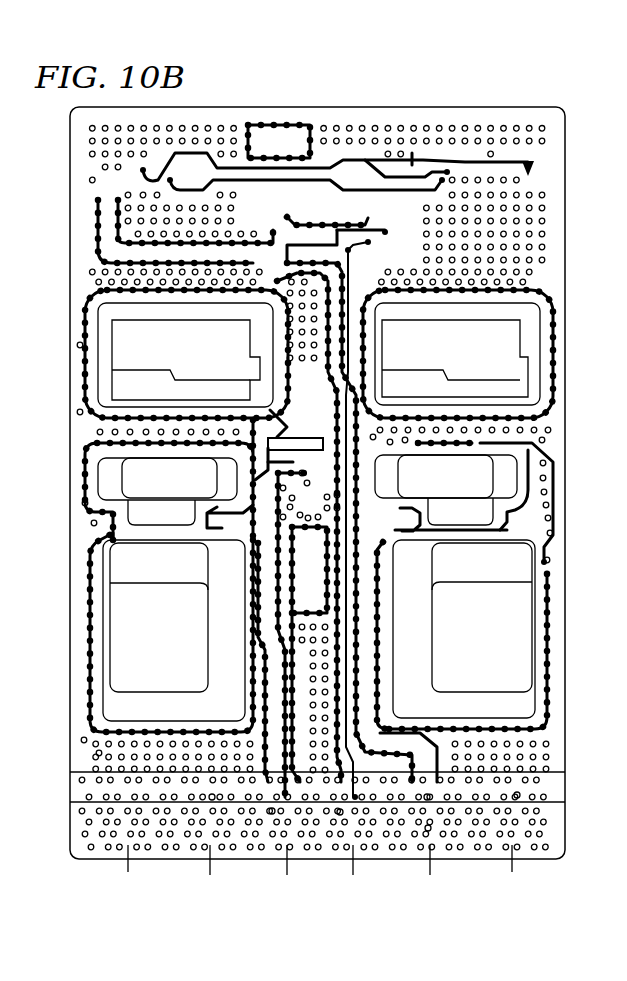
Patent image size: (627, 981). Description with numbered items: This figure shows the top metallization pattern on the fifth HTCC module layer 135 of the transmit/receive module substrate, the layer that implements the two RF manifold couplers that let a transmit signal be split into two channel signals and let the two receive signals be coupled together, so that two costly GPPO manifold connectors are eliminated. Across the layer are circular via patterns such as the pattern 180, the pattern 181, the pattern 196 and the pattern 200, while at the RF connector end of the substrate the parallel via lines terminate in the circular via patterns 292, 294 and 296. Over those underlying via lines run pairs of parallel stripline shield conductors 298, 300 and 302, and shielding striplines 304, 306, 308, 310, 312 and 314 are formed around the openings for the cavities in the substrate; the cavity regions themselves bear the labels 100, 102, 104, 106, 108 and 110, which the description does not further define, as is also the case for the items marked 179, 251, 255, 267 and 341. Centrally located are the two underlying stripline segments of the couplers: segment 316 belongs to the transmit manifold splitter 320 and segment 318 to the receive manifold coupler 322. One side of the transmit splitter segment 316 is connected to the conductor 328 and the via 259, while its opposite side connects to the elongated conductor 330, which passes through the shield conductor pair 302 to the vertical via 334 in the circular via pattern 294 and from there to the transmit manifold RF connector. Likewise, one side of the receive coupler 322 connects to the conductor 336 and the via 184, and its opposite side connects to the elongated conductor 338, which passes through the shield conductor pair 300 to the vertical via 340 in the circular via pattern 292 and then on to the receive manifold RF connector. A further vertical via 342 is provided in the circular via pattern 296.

The module layer 135 is at (566, 126).
The circular via pattern 180 is at (260, 130).
The transmit manifold coupler 320 is at (308, 252).
The conductor 328 is at (353, 230).
The via 259 is at (385, 230).
The circular via pattern 181 is at (103, 168).
The conductive trace 179 is at (110, 186).
The stripline shield conductor pair 298 is at (98, 232).
The shielding stripline 304 is at (85, 350).
The antenna element 100 is at (100, 380).
The transmit manifold splitter segment 316 is at (283, 253).
The via 184 is at (290, 415).
The conductor 336 is at (273, 408).
The elongated conductor 330 is at (360, 283).
The stripline shield conductor pair 302 is at (350, 350).
The receive manifold coupler segment 318 is at (320, 452).
The antenna element 106 is at (540, 320).
The shielding stripline 310 is at (553, 352).
The shielding stripline 306 is at (85, 470).
The antenna element 102 is at (88, 500).
The receive manifold coupler 322 is at (268, 458).
The antenna element 108 is at (512, 468).
The shielding stripline 312 is at (543, 488).
The elongated conductor 338 is at (257, 566).
The stripline shield conductor pair 300 is at (262, 603).
The shielding stripline 308 is at (90, 625).
The antenna element 104 is at (90, 685).
The conductive trace 341 is at (375, 612).
The shielding stripline 314 is at (550, 636).
The antenna element 110 is at (523, 678).
The circular via pattern 196 is at (105, 797).
The board edge line 251 is at (127, 797).
The via 267 is at (517, 795).
The circular via pattern 200 is at (537, 812).
The via 255 is at (212, 800).
The circular via pattern 292 is at (272, 814).
The vertical via 340 is at (287, 802).
The circular via pattern 294 is at (340, 815).
The vertical via 334 is at (355, 800).
The vertical via 342 is at (427, 800).
The circular via pattern 296 is at (428, 831).